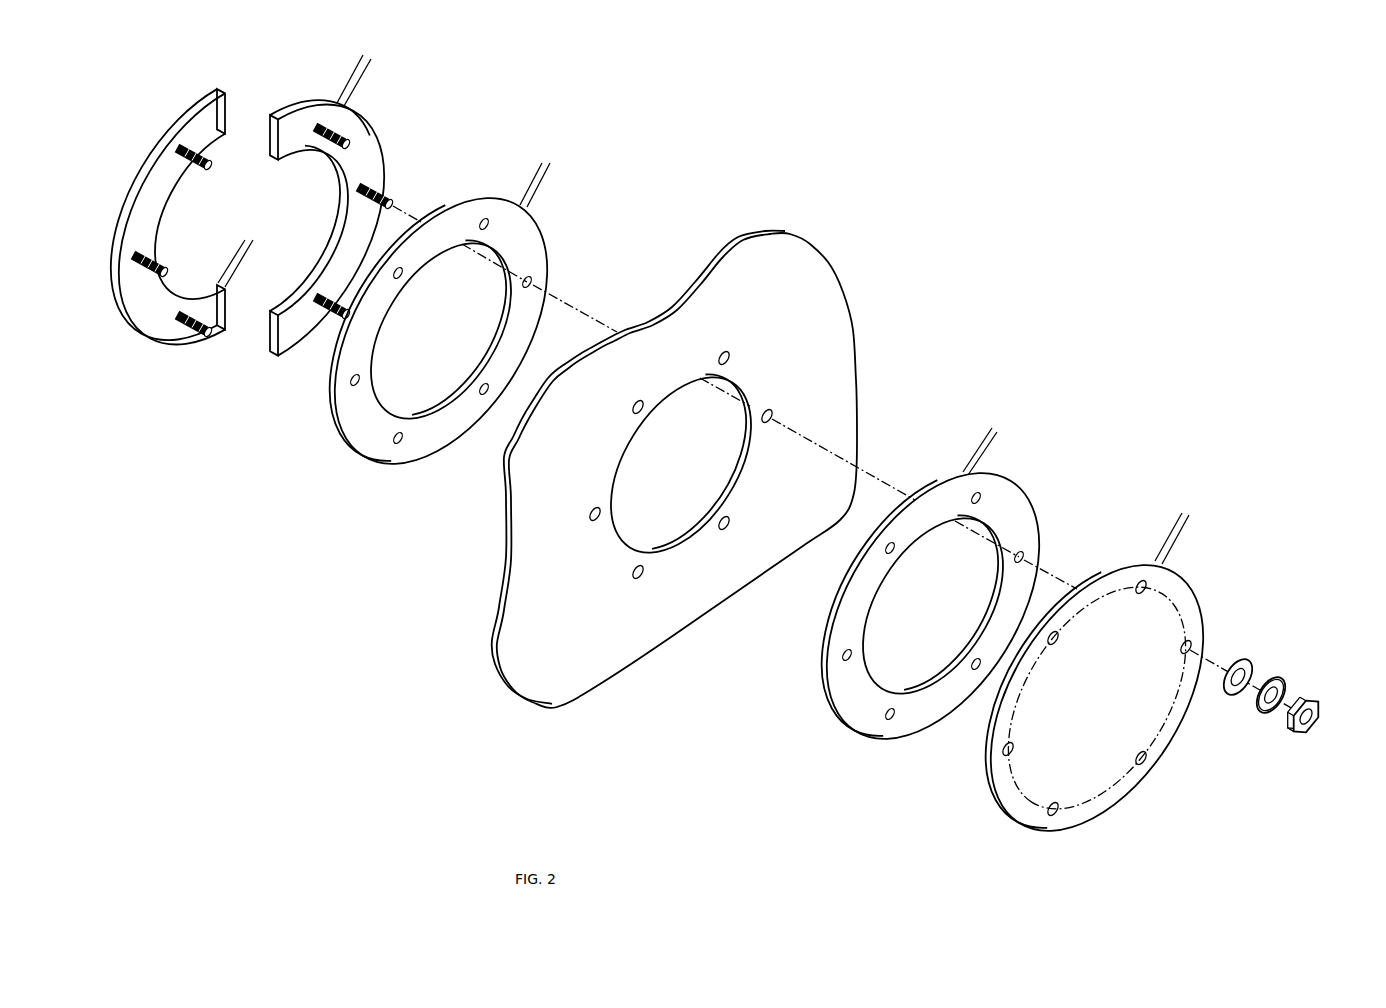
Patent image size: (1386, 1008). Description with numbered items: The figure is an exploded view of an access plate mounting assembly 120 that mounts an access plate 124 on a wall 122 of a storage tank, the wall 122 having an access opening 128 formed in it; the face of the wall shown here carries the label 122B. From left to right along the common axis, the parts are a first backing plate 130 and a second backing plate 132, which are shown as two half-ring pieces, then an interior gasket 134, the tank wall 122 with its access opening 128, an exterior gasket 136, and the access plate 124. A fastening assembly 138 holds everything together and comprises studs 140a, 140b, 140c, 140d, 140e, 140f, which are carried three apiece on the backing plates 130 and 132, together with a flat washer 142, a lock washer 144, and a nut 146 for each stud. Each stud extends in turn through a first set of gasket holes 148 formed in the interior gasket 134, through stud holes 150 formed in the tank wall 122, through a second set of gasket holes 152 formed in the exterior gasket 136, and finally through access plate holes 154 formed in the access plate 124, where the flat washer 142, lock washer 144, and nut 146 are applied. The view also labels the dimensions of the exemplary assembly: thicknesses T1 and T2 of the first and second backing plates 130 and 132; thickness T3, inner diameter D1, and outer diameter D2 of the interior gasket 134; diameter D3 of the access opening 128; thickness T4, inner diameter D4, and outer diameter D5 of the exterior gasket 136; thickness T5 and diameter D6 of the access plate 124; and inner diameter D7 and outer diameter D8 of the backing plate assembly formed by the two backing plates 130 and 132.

The access plate mounting assembly 120 is at (1018, 340).
The wall 122 is at (838, 322).
The second side of plate 122B is at (783, 308).
The access plate 124 is at (1188, 608).
The access opening 128 is at (718, 486).
The first backing plate 130 is at (378, 168).
The second backing plate 132 is at (150, 330).
The interior gasket 134 is at (534, 243).
The exterior gasket 136 is at (1015, 505).
The fastening assembly 138 is at (1385, 735).
The stud 140a is at (349, 144).
The stud 140b is at (392, 205).
The stud 140c is at (347, 316).
The stud 140d is at (210, 337).
The stud 140e is at (165, 275).
The stud 140f is at (212, 166).
The flat washer 142 is at (1235, 692).
The lock washer 144 is at (1270, 710).
The nut 146 is at (1303, 728).
The first set of gasket holes 148 is at (399, 446).
The stud holes 150 is at (596, 520).
The second set of gasket holes 152 is at (893, 722).
The access plate holes 154 is at (1054, 814).
The inner diameter of the interior gasket D1 is at (375, 393).
The outer diameter of the interior gasket D2 is at (345, 432).
The diameter of the access opening D3 is at (616, 475).
The inner diameter of the exterior gasket D4 is at (865, 667).
The outer diameter of the exterior gasket D5 is at (835, 707).
The diameter of the access plate D6 is at (1000, 810).
The inner diameter of the backing plate assembly D7 is at (155, 226).
The outer diameter of the backing plate assembly D8 is at (121, 281).
The thickness of the first backing plate T1 is at (377, 77).
The thickness of the second backing plate T2 is at (229, 243).
The thickness of the interior gasket T3 is at (523, 165).
The thickness of the exterior gasket T4 is at (967, 432).
The thickness of the access plate T5 is at (1162, 517).